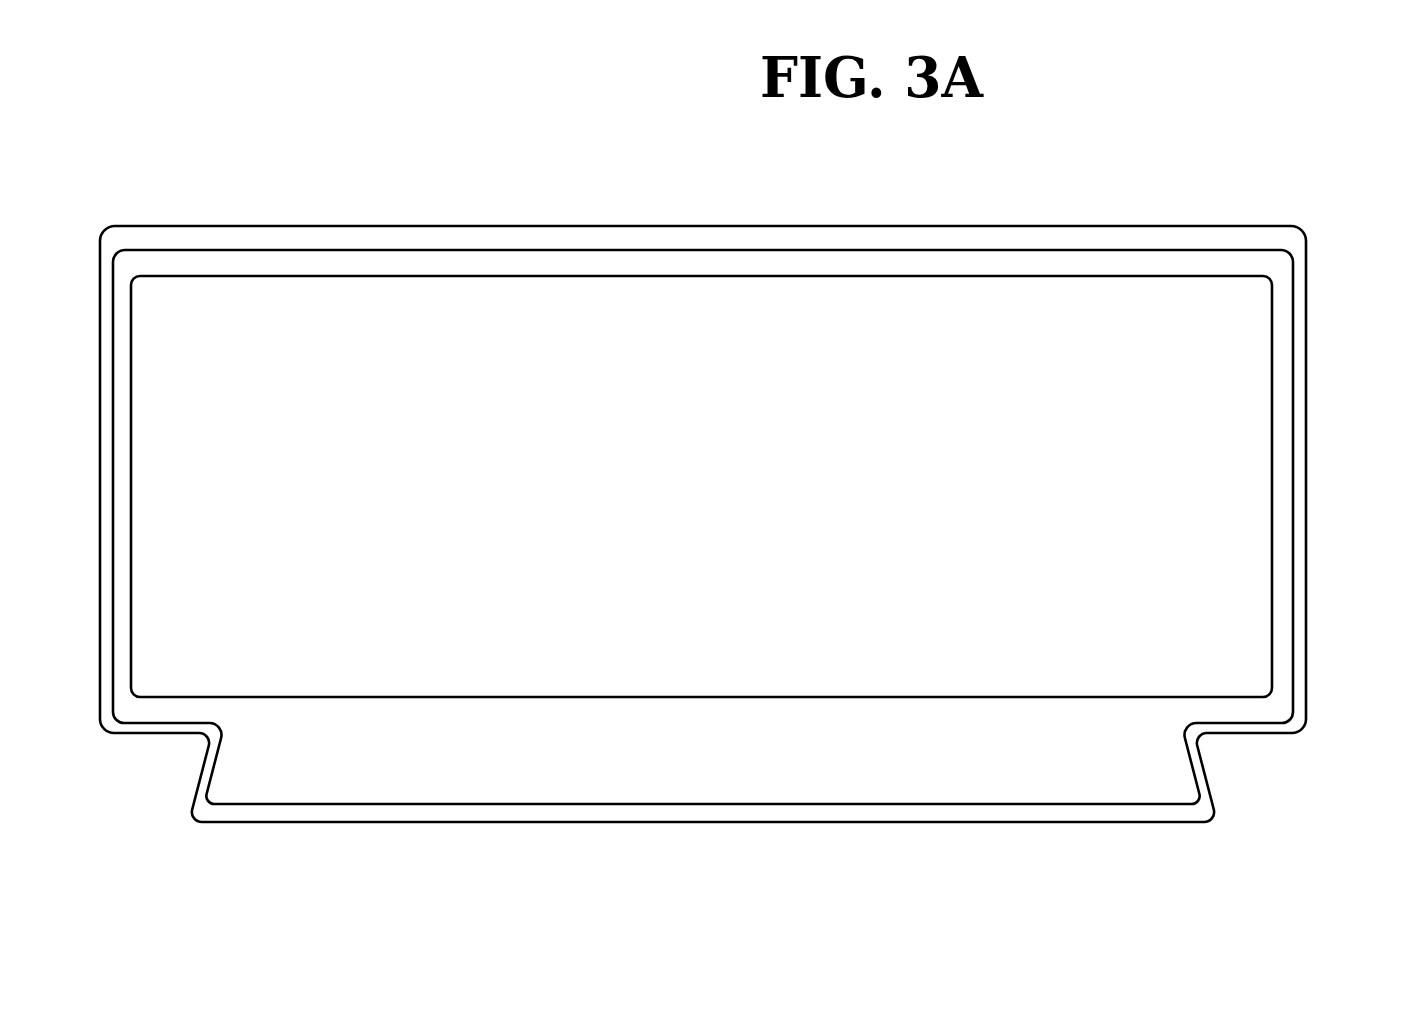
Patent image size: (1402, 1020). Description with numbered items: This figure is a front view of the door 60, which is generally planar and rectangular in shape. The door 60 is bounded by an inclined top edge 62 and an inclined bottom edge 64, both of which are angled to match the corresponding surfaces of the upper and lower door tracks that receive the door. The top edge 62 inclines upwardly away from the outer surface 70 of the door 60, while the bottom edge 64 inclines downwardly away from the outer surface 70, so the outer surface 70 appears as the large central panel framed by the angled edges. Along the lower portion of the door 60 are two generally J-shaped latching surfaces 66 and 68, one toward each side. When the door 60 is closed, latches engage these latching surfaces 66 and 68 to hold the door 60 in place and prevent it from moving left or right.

The door 60 is at (1280, 180).
The top edge 62 is at (408, 240).
The bottom edge 64 is at (1018, 813).
The latching surface 66 is at (195, 777).
The latching surface 68 is at (1205, 777).
The outer surface 70 is at (1240, 465).